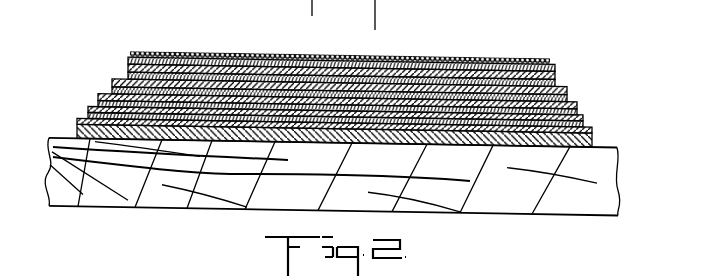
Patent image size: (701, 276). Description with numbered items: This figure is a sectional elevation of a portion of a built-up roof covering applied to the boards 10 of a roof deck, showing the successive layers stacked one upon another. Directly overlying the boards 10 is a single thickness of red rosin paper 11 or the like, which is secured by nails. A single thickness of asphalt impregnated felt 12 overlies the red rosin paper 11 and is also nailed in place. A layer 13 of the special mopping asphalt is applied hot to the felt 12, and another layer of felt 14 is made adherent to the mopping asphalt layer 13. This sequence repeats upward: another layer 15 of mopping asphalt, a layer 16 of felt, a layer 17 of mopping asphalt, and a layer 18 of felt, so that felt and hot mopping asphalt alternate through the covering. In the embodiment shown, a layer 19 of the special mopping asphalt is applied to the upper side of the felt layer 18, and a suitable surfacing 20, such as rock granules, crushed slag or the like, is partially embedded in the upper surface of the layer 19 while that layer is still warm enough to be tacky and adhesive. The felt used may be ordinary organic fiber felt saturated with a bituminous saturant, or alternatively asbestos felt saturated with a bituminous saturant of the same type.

The boards 10 is at (108, 195).
The red rosin paper 11 is at (78, 133).
The asphalt impregnated felt 12 is at (85, 117).
The mopping asphalt layer 13 is at (88, 110).
The felt layer 14 is at (93, 98).
The mopping asphalt layer 15 is at (98, 101).
The felt layer 16 is at (100, 91).
The mopping asphalt layer 17 is at (114, 86).
The felt layer 18 is at (118, 77).
The mopping asphalt layer 19 is at (126, 54).
The surfacing 20 is at (181, 52).